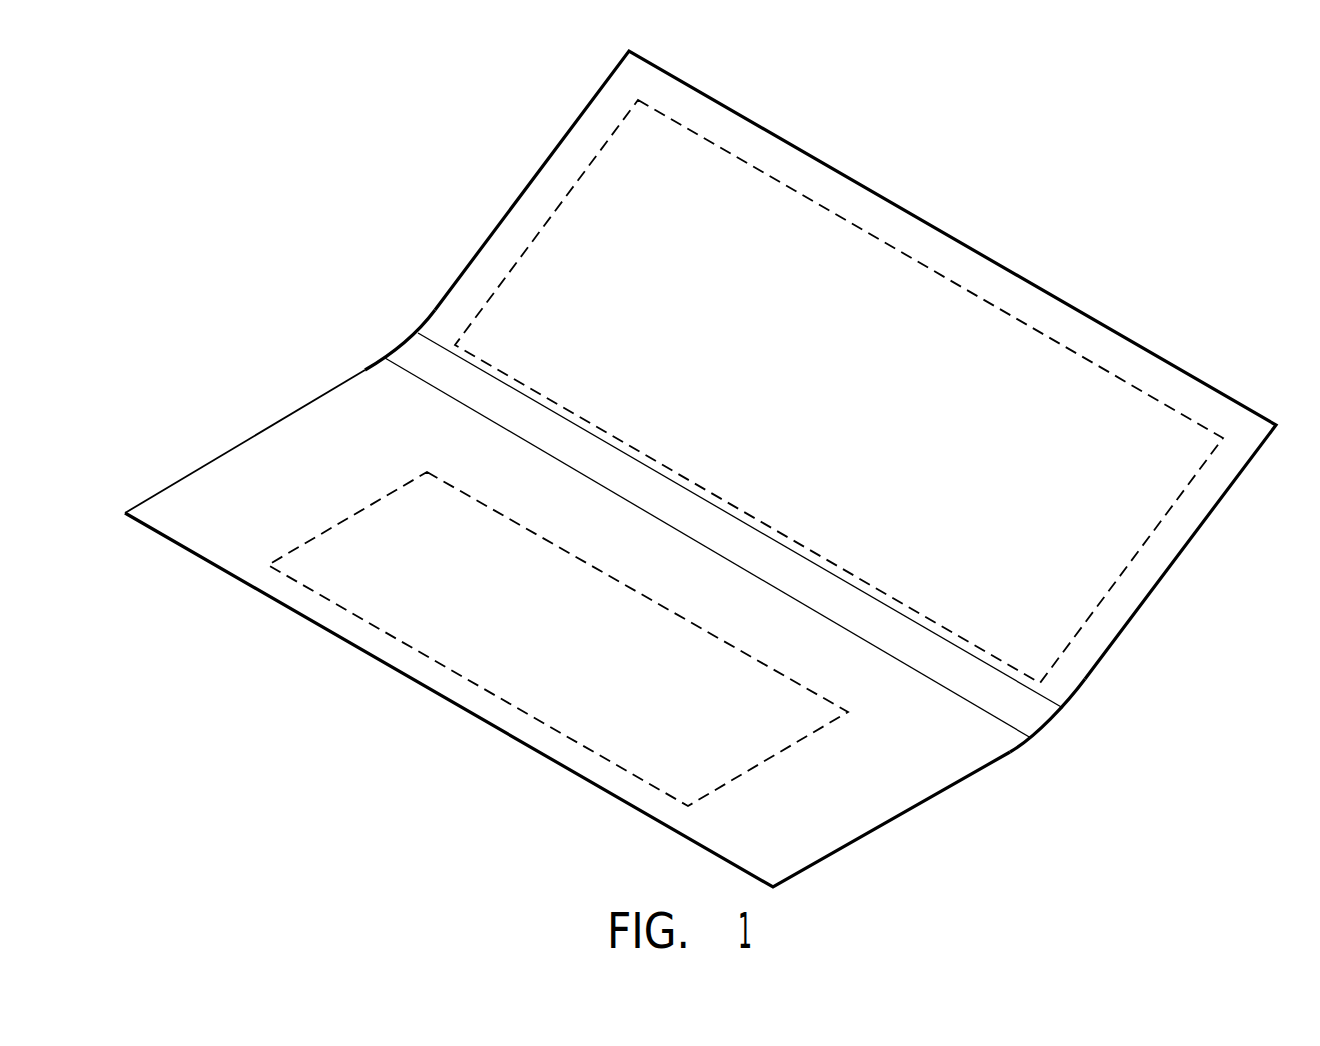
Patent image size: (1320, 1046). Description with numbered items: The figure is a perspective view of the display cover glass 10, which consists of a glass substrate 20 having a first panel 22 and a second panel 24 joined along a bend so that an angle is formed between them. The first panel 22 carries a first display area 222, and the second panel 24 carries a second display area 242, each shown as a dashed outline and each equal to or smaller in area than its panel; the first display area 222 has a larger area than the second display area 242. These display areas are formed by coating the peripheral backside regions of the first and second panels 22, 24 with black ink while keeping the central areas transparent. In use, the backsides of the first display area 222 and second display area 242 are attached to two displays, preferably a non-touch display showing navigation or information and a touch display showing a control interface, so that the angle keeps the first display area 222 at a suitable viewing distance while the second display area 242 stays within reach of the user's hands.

The display cover glass 10 is at (700, 469).
The glass substrate 20 is at (700, 469).
The first panel 22 is at (820, 401).
The second panel 24 is at (578, 599).
The first display area 222 is at (597, 213).
The second display area 242 is at (353, 557).